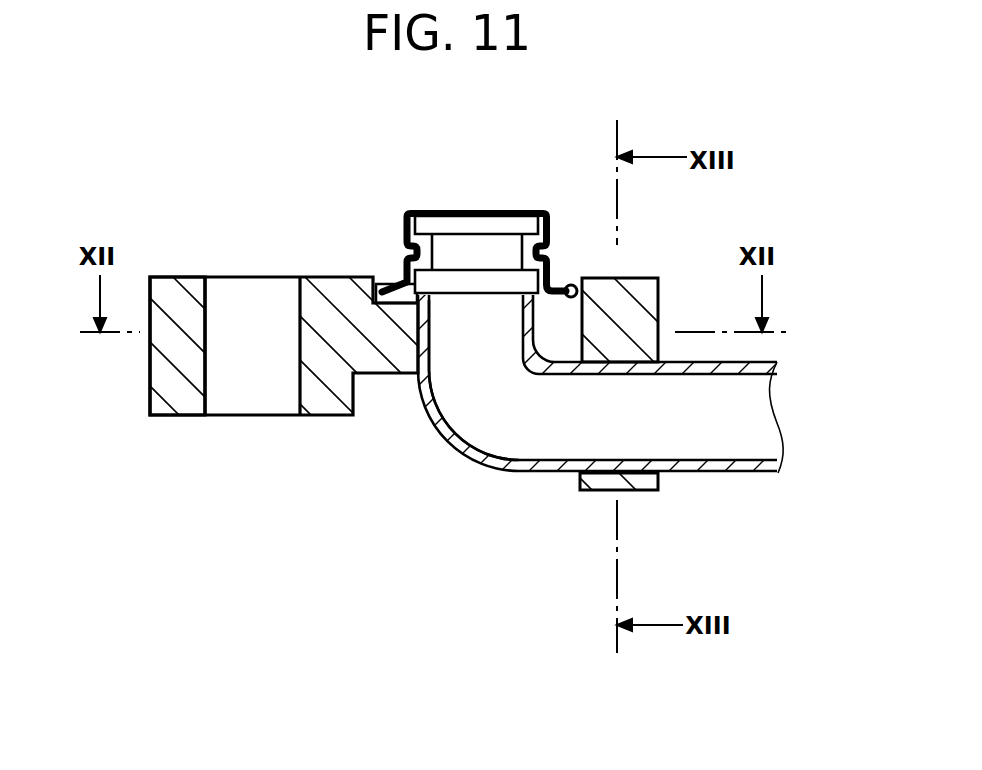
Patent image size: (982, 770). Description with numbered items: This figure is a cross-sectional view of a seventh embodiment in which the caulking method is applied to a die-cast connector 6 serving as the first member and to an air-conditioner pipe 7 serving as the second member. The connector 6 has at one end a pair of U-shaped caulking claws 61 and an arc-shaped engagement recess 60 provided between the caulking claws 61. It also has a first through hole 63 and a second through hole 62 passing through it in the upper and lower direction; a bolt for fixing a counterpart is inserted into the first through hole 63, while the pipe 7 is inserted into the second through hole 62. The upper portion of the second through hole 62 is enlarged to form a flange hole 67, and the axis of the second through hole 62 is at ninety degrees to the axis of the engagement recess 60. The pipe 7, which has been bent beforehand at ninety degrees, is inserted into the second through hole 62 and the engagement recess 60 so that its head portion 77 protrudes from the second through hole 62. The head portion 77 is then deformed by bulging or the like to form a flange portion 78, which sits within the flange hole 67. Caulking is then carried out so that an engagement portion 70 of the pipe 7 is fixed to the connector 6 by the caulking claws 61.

The connector 6 is at (327, 322).
The pipe 7 is at (730, 467).
The engagement recess 60 is at (596, 418).
The caulking claws 61 is at (598, 482).
The second through hole 62 is at (430, 358).
The first through hole 63 is at (207, 368).
The flange hole 67 is at (382, 291).
The engagement portion 70 is at (612, 348).
The head portion 77 is at (547, 217).
The flange portion 78 is at (567, 280).